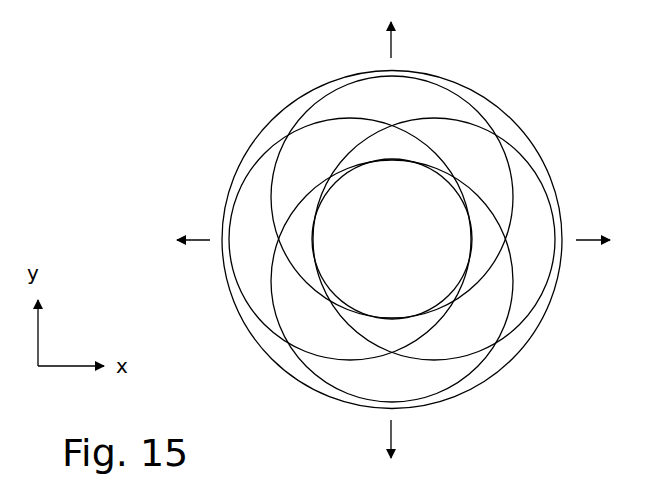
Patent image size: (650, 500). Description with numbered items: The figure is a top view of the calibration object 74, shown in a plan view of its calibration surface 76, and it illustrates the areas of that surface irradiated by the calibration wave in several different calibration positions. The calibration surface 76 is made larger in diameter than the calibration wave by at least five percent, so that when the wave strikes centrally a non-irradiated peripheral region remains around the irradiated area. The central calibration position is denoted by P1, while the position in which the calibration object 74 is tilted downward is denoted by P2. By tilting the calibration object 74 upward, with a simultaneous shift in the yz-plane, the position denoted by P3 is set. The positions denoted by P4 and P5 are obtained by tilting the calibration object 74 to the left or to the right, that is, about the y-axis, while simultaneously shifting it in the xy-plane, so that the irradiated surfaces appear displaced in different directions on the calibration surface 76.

The calibration object 74 is at (288, 108).
The calibration surface 76 is at (491, 116).
The central calibration position P1 is at (481, 167).
The downwardly tilted calibration position P2 is at (458, 93).
The upwardly tilted calibration position P3 is at (475, 370).
The calibration position tilted to one side P4 is at (548, 182).
The calibration position tilted to the other side P5 is at (247, 175).